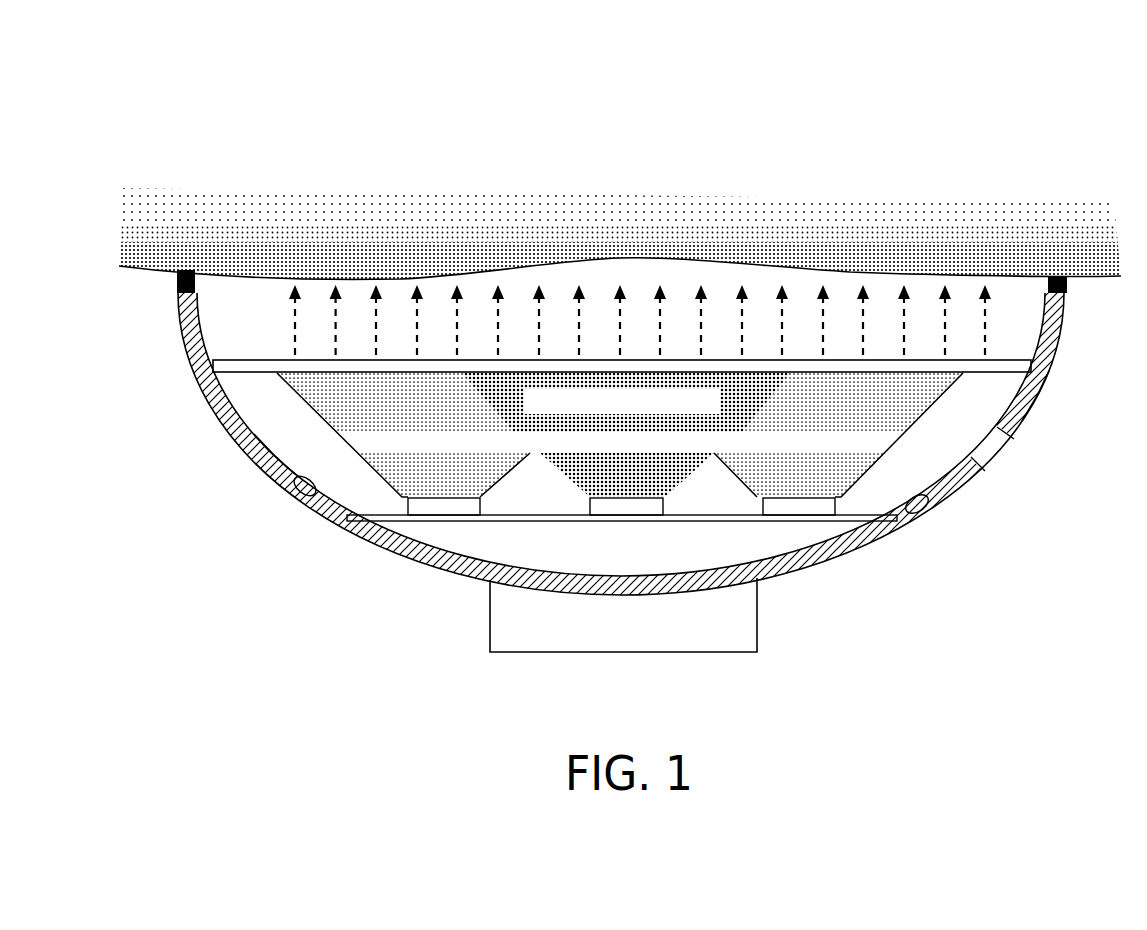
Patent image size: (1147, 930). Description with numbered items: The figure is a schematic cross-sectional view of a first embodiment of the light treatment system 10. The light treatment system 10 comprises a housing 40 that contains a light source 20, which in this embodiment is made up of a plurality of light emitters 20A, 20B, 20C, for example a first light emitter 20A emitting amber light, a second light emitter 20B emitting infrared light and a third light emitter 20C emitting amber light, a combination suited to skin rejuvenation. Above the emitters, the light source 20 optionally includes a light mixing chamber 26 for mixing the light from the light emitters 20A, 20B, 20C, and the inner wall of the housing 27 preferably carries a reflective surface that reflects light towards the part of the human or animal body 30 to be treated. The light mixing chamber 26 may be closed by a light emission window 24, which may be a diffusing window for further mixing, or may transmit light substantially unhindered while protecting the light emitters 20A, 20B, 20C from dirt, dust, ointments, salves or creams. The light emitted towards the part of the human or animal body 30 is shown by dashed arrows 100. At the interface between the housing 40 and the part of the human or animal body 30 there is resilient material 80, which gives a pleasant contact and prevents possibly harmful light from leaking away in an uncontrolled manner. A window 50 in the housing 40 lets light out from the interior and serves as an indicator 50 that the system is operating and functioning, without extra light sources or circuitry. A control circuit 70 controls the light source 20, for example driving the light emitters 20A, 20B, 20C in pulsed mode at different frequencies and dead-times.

The light treatment system 10 is at (983, 171).
The light source 20 is at (593, 497).
The first light emitter 20A is at (428, 507).
The second light emitter 20B is at (640, 510).
The third light emitter 20C is at (820, 507).
The light emission window 24 is at (588, 444).
The light mixing chamber 26 is at (296, 446).
The inner wall of the housing 27 is at (312, 498).
The part of the human or animal body 30 is at (1047, 252).
The housing 40 is at (1038, 396).
The window 50 is at (993, 450).
The control circuit 70 is at (503, 637).
The resilient material 80 is at (1067, 285).
The dashed arrows 100 is at (265, 312).